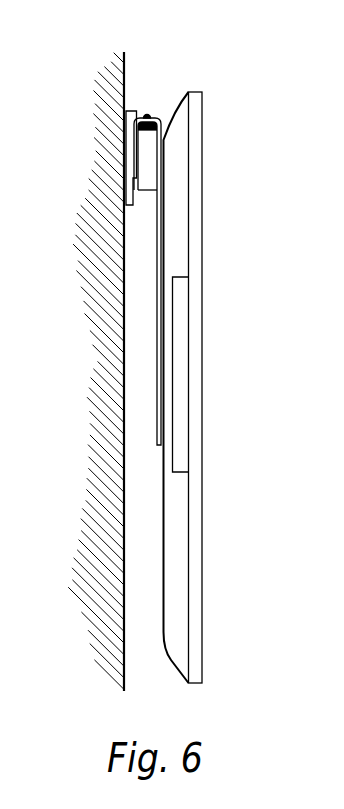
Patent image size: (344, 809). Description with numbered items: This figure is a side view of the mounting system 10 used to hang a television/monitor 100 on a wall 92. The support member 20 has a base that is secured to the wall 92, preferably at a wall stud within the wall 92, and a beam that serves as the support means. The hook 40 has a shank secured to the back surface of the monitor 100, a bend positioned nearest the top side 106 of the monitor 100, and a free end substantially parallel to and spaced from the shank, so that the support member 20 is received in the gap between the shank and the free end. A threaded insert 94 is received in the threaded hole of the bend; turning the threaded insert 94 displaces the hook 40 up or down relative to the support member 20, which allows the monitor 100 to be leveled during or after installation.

The mounting system 10 is at (164, 106).
The support member 20 is at (150, 205).
The hook 40 is at (152, 259).
The wall 92 is at (125, 325).
The threaded insert 94 is at (147, 115).
The television/monitor 100 is at (196, 182).
The top side 106 is at (194, 92).